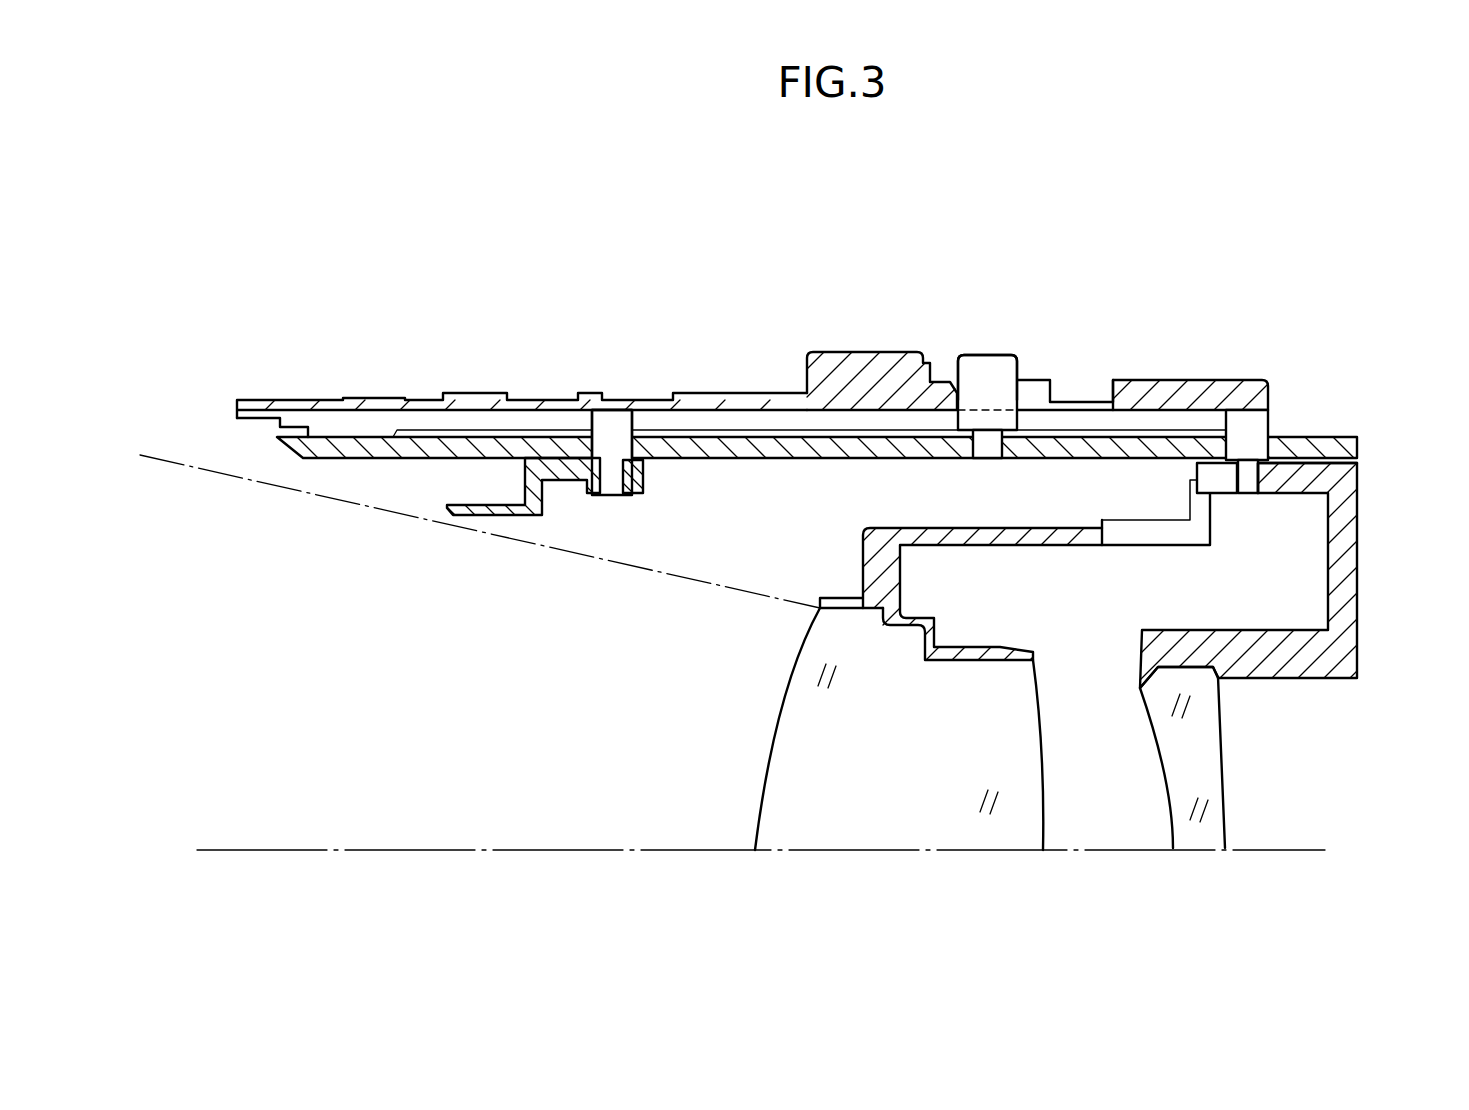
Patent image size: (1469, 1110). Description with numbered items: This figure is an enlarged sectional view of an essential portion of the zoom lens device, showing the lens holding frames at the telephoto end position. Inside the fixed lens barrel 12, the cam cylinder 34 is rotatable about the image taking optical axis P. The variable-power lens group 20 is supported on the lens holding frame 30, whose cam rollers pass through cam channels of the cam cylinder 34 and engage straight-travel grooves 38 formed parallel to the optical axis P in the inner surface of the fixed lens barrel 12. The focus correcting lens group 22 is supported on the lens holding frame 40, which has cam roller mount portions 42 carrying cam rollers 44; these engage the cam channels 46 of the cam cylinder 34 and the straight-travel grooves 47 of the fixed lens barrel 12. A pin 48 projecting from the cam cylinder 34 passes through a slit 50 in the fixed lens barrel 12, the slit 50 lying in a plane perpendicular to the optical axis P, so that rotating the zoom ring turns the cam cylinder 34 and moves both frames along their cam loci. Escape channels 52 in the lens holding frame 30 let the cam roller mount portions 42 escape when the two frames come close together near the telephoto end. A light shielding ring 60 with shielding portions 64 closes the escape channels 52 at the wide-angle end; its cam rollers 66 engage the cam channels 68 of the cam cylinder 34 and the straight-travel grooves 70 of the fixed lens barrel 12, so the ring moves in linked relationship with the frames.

The fixed lens barrel 12 is at (862, 365).
The variable-power lens group 20 is at (772, 792).
The focus correcting lens group 22 is at (1213, 765).
The lens holding frame 30 is at (1012, 547).
The cam cylinder 34 is at (792, 457).
The straight-travel grooves 38 is at (727, 408).
The lens holding frame 40 is at (1352, 583).
The cam roller mount portions 42 is at (1305, 478).
The cam rollers 44 is at (1270, 427).
The cam channels 46 is at (1232, 440).
The straight-travel grooves 47 is at (1175, 423).
The pin 48 is at (997, 370).
The slit 50 is at (966, 390).
The escape channels 52 is at (1193, 505).
The light shielding ring 60 is at (492, 540).
The shielding portions 64 is at (642, 484).
The cam rollers 66 is at (618, 432).
The cam channels 68 is at (642, 455).
The straight-travel grooves 70 is at (537, 408).
The image taking optical axis P is at (513, 850).